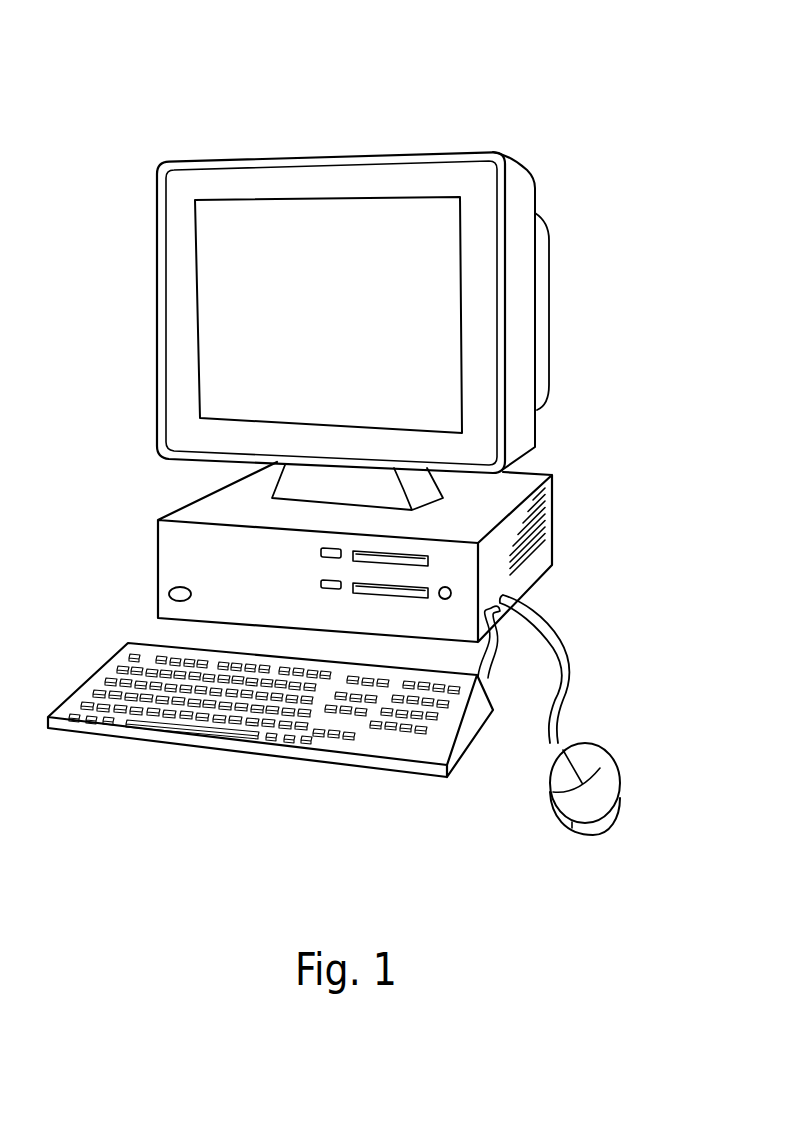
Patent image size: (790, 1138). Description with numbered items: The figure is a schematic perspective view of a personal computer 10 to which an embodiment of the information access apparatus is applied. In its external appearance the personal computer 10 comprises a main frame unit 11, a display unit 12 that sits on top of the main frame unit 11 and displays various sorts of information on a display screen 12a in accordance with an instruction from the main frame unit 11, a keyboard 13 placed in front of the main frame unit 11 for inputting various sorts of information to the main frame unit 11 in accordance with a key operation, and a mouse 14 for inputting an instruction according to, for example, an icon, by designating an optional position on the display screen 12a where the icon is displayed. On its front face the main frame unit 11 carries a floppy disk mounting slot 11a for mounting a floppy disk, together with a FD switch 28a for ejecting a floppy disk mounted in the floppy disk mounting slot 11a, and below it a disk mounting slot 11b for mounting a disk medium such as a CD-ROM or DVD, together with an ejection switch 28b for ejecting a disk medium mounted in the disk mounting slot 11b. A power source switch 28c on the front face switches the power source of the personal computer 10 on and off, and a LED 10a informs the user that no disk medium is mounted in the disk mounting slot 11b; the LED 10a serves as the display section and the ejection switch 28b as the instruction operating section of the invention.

The personal computer 10 is at (402, 111).
The LED 10a is at (447, 586).
The main frame unit 11 is at (535, 540).
The floppy disk (FD) mounting slot 11a is at (357, 562).
The disk mounting slot 11b is at (357, 590).
The display unit 12 is at (522, 283).
The display screen 12a is at (428, 337).
The keyboard 13 is at (198, 723).
The mouse 14 is at (602, 790).
The FD switch 28a is at (320, 553).
The ejection switch 28b is at (320, 585).
The power source switch 28c is at (169, 591).